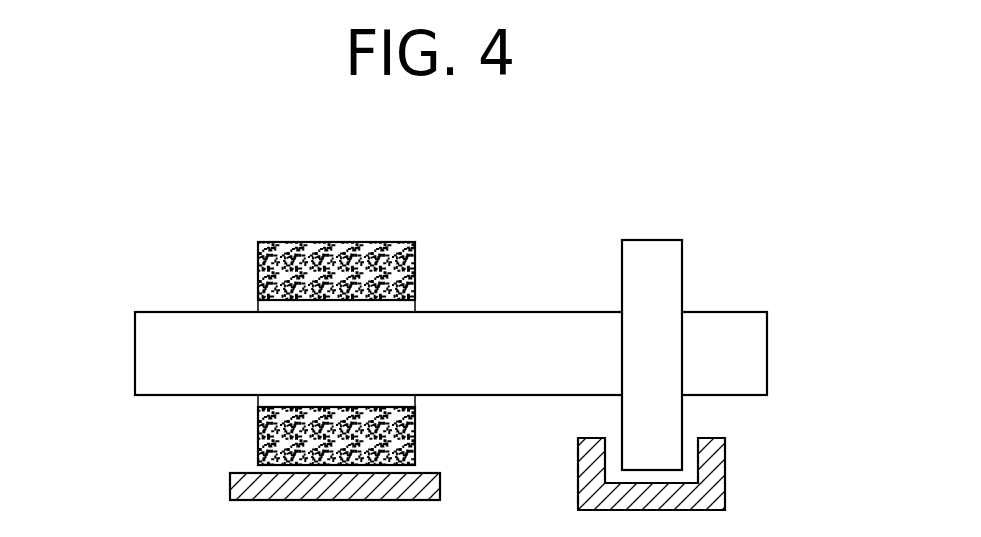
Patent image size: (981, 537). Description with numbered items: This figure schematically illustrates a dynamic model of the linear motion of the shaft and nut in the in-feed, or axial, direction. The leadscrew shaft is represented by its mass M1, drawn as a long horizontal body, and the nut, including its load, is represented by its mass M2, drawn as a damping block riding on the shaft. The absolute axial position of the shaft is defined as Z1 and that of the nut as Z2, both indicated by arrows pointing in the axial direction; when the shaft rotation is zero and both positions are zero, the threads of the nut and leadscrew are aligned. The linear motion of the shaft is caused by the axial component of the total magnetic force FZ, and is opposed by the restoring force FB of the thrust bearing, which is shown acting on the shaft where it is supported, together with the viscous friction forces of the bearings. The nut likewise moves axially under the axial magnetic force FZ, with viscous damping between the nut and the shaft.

The mass of the leadscrew M1 is at (451, 353).
The mass of the nut M2 is at (336, 332).
The absolute axial position of the shaft Z1 is at (652, 225).
The absolute axial position of the nut Z2 is at (282, 225).
The restoring force of thrust bearing FB is at (695, 265).
The axial component of total magnetic force FZ is at (280, 398).